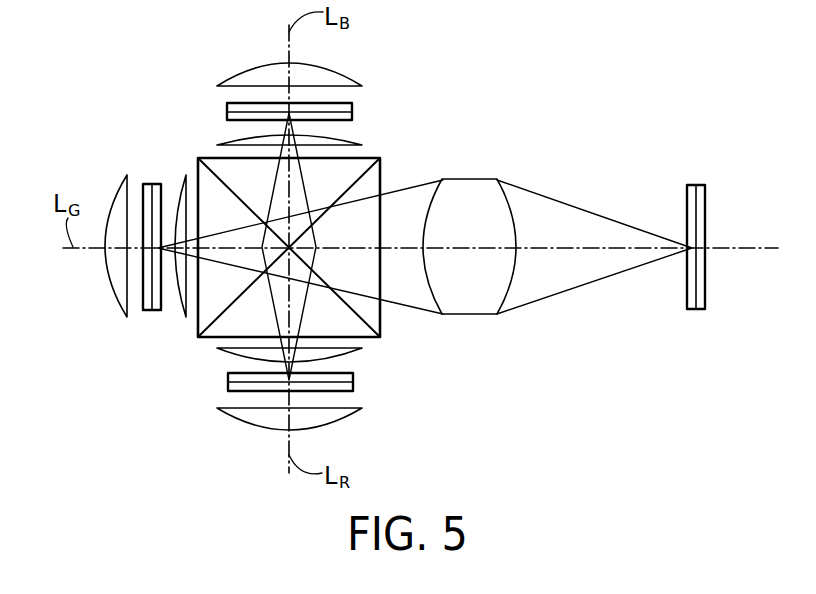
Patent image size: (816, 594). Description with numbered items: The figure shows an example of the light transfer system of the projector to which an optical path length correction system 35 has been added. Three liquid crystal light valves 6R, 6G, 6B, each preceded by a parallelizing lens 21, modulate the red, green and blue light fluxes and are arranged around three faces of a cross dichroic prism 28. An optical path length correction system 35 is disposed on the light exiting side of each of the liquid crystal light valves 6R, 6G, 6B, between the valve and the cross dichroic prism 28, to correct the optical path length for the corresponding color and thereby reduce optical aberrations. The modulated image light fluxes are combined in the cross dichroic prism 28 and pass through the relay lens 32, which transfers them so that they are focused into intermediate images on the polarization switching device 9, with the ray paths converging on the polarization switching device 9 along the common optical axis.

The parallelizing lens 21 is at (347, 72).
The liquid crystal light valve 6B is at (352, 110).
The liquid crystal light valve 6R is at (353, 383).
The liquid crystal light valve 6G is at (150, 312).
The optical path length correction system 35 is at (360, 140).
The cross dichroic prism 28 is at (213, 339).
The relay lens 32 is at (480, 178).
The polarization switching device 9 is at (697, 185).